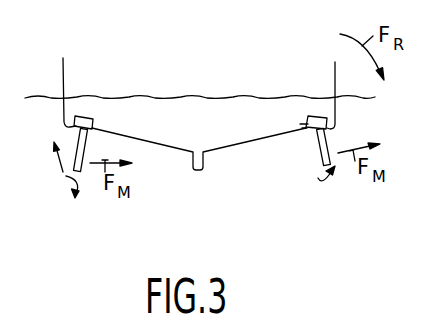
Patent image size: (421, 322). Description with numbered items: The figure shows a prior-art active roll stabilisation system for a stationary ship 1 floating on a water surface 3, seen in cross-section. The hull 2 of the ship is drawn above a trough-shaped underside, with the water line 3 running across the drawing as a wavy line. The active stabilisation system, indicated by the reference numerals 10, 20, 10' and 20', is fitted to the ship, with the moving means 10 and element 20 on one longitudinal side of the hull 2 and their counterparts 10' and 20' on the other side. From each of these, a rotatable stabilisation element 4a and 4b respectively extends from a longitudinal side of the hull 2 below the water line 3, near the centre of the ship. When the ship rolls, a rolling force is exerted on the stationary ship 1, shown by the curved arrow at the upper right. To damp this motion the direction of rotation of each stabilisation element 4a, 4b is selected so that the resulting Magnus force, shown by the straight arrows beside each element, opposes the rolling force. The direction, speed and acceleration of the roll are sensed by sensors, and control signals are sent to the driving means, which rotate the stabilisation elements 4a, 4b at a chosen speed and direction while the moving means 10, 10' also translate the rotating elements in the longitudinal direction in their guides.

The stationary ship 1 is at (215, 75).
The hull 2 is at (63, 83).
The water surface 3 is at (212, 210).
The moving means 10 is at (102, 86).
The active stabilisation system element 20 is at (83, 122).
The moving means 10' is at (290, 174).
The active stabilisation system element 20' is at (313, 122).
The rotatable stabilisation element 4a is at (82, 172).
The rotatable stabilisation element 4b is at (331, 161).